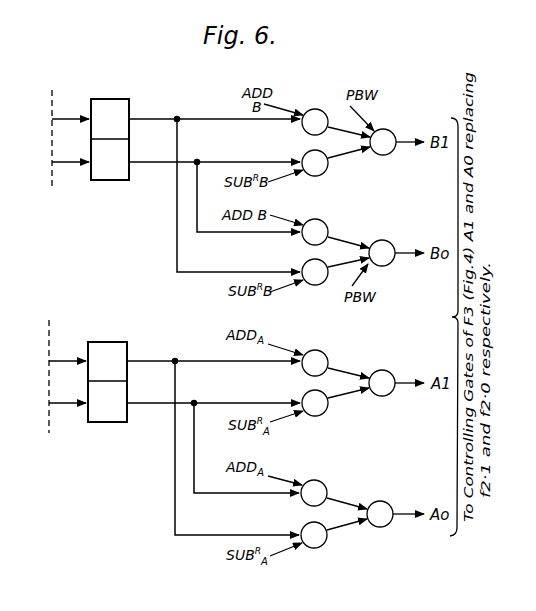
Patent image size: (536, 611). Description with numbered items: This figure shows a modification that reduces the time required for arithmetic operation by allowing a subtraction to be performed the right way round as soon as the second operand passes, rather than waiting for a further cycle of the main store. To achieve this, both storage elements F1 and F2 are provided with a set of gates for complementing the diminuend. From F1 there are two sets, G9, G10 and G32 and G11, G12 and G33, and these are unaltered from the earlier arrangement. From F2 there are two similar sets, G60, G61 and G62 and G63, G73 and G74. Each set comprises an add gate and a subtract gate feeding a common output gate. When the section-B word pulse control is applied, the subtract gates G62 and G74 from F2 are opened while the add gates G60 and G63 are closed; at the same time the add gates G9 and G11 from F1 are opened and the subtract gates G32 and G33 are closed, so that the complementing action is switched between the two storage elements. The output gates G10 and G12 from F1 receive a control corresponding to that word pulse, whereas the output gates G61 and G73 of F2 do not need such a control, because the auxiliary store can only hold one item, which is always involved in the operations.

The flip-flop F1 is at (90, 133).
The flip-flop F2 is at (88, 376).
The add gate G9 is at (314, 111).
The gate G10 is at (385, 150).
The add gate G11 is at (325, 221).
The gate G12 is at (386, 261).
The subtract gate G32 is at (329, 172).
The subtract gate G33 is at (313, 282).
The add gate G60 is at (315, 353).
The gate G61 is at (385, 392).
The subtract gate G62 is at (317, 414).
The add gate G63 is at (315, 483).
The gate G73 is at (382, 522).
The subtract gate G74 is at (317, 546).